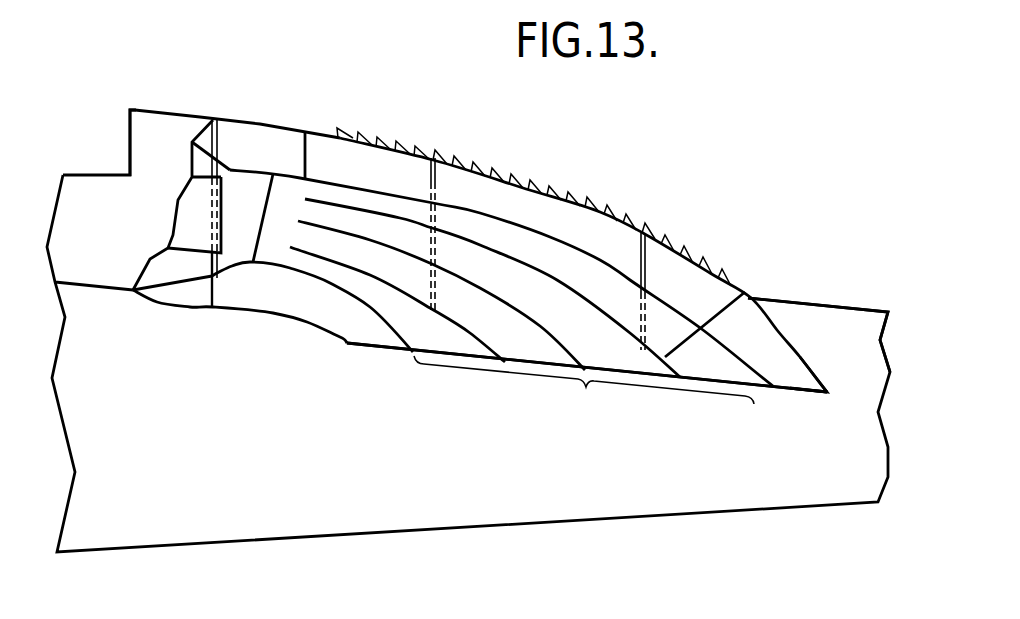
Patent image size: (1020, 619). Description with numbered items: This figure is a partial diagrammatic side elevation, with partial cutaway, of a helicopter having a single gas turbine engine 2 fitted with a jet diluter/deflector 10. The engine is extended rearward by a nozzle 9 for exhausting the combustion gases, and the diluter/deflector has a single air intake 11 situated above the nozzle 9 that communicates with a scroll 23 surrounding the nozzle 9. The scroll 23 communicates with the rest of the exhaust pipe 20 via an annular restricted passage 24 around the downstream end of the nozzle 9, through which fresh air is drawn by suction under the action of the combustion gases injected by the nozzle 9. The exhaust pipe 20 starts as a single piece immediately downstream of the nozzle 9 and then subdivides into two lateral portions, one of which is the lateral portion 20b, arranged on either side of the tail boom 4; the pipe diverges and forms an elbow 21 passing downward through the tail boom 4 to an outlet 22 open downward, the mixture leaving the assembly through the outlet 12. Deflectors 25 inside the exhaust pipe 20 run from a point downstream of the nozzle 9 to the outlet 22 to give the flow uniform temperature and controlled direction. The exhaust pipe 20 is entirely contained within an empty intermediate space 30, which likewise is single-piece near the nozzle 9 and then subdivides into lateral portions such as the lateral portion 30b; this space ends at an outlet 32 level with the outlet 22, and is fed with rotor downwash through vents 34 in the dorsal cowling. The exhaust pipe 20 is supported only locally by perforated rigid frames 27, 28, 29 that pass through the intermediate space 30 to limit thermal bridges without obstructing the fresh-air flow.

The gas turbine engine 2 is at (107, 210).
The tail boom 4 is at (800, 327).
The nozzle 9 is at (230, 170).
The jet diluter/deflector 10 is at (614, 204).
The air intake 11 is at (130, 142).
The outlet 12 is at (808, 395).
The exhaust pipe 20 is at (252, 207).
The lateral portion of the exhaust pipe 20b is at (305, 232).
The elbow 21 is at (645, 292).
The outlet 22 is at (587, 387).
The scroll 23 is at (207, 133).
The annular restricted passage 24 is at (208, 279).
The deflector 25 is at (480, 343).
The perforated rigid frame 27 is at (195, 213).
The perforated rigid frame 28 is at (437, 172).
The perforated rigid frame 29 is at (648, 260).
The intermediate space 30 is at (285, 157).
The lateral portion of the intermediate space 30b is at (543, 215).
The outlet 32 is at (374, 350).
The vent 34 is at (522, 185).